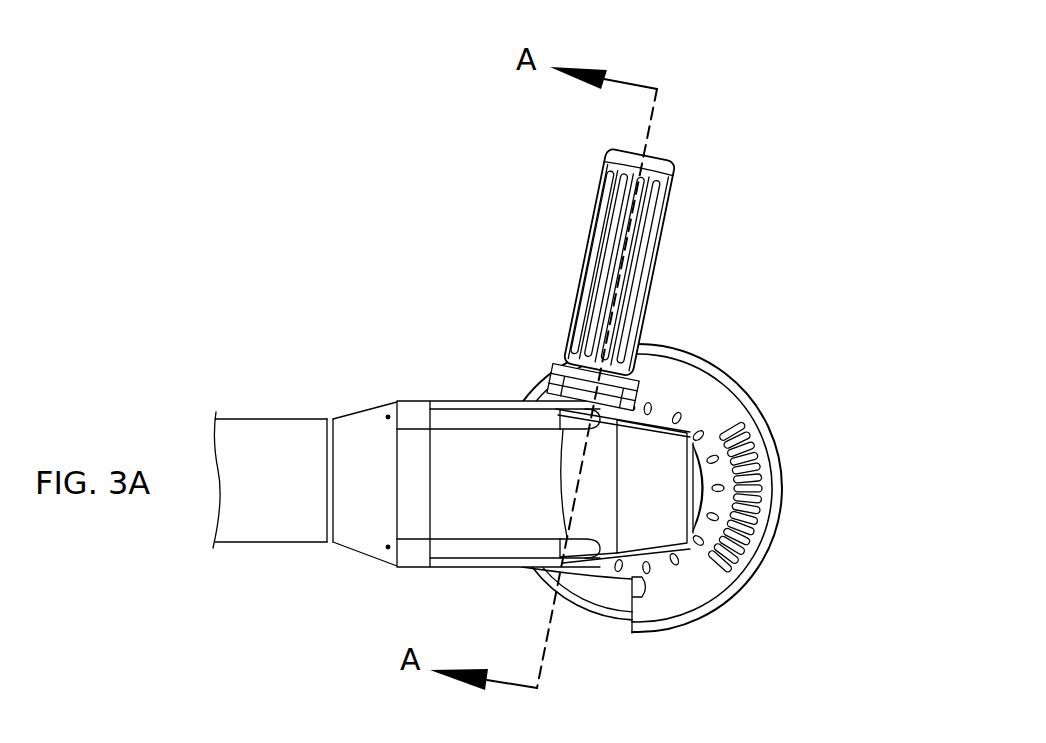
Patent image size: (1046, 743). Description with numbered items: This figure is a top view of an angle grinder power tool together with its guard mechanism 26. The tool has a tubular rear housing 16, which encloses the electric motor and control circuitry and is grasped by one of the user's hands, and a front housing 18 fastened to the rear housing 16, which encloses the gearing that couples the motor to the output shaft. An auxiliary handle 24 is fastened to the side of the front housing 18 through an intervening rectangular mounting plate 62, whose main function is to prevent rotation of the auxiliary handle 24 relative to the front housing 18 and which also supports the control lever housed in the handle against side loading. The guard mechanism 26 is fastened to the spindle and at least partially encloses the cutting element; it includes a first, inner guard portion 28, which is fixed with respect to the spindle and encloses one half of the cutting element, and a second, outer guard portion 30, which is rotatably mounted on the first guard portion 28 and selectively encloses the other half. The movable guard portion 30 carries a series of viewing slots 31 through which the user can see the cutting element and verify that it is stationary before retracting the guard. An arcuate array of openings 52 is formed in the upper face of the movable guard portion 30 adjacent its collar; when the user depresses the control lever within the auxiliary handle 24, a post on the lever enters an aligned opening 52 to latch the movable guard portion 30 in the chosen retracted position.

The rear housing 16 is at (240, 523).
The front housing 18 is at (658, 470).
The auxiliary handle 24 is at (667, 240).
The guard mechanism 26 is at (843, 441).
The first (inner) guard portion 28 is at (587, 593).
The second (outer) guard portion 30 is at (667, 602).
The viewing slots 31 is at (760, 495).
The openings 52 is at (662, 405).
The mounting plate 62 is at (558, 390).